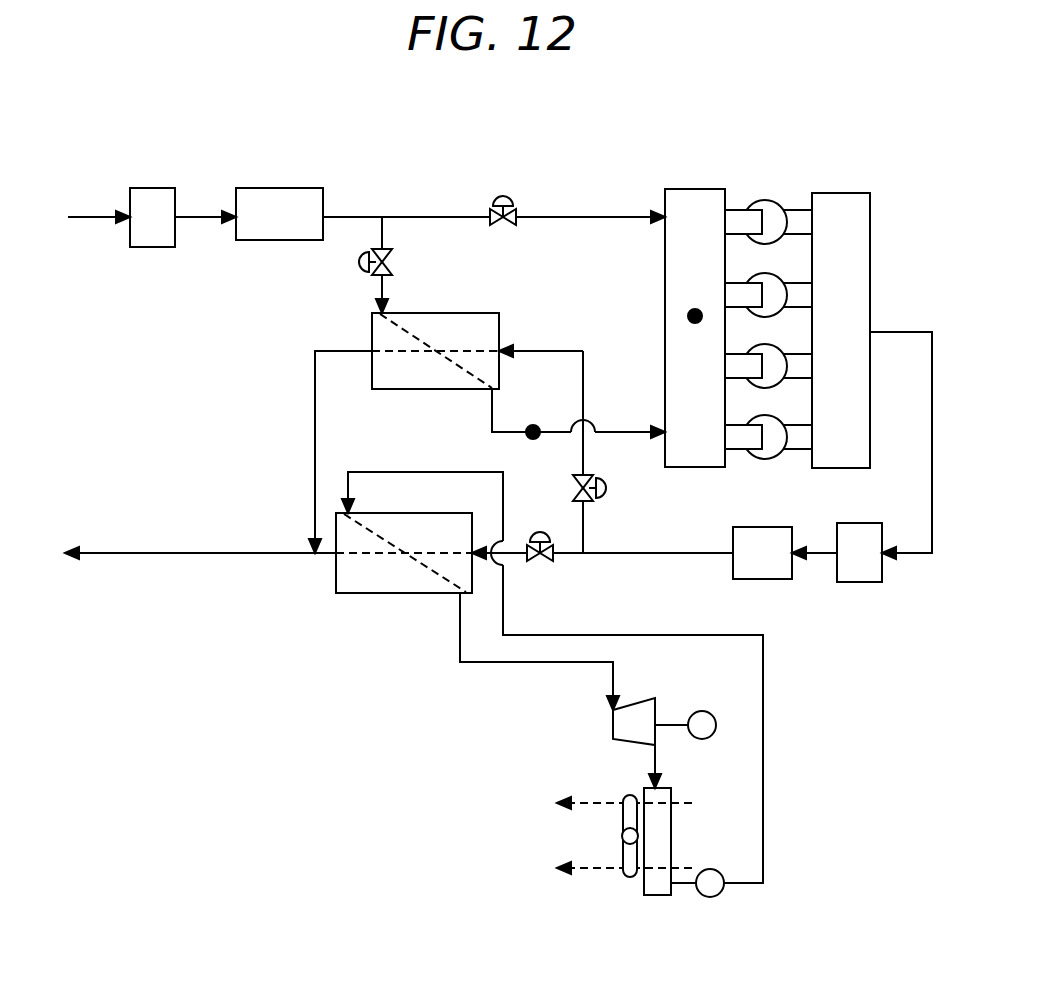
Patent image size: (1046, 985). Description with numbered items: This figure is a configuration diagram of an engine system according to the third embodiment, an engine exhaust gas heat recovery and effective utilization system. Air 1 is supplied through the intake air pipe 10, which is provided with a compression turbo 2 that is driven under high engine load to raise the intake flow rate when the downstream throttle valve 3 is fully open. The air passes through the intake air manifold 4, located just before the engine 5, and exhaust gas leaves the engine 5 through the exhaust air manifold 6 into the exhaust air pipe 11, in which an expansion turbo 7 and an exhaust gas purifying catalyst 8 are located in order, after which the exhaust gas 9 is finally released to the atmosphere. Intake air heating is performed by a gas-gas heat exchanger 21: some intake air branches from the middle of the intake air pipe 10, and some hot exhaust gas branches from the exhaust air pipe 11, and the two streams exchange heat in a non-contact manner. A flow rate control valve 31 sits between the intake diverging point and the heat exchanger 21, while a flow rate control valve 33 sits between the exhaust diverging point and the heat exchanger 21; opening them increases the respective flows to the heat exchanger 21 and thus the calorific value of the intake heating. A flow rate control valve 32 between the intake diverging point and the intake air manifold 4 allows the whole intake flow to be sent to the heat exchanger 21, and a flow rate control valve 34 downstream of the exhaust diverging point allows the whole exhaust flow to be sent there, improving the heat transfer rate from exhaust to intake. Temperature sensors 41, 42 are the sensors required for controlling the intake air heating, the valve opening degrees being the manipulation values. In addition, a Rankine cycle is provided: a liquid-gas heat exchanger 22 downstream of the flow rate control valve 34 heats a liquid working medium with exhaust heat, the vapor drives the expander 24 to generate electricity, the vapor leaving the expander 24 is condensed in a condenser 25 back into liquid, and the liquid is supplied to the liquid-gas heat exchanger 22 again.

The air 1 is at (91, 215).
The compression turbo 2 is at (151, 187).
The intake air pipe 10 is at (200, 215).
The throttle valve 3 is at (277, 187).
The flow rate control valve 32 is at (503, 196).
The intake air manifold 4 is at (692, 187).
The engine 5 is at (765, 199).
The exhaust air manifold 6 is at (840, 191).
The flow rate control valve 31 is at (359, 258).
The heat exchanger 21 is at (437, 311).
The temperature sensor 41 is at (688, 316).
The temperature sensor 42 is at (533, 441).
The flow rate control valve 33 is at (607, 489).
The flow rate control valve 34 is at (541, 566).
The exhaust air pipe 11 is at (658, 556).
The exhaust gas 9 is at (92, 556).
The liquid-gas heat exchanger 22 is at (396, 596).
The exhaust gas purifying catalyst 8 is at (765, 581).
The expansion turbo 7 is at (855, 584).
The expander 24 is at (612, 720).
The condenser 25 is at (657, 897).